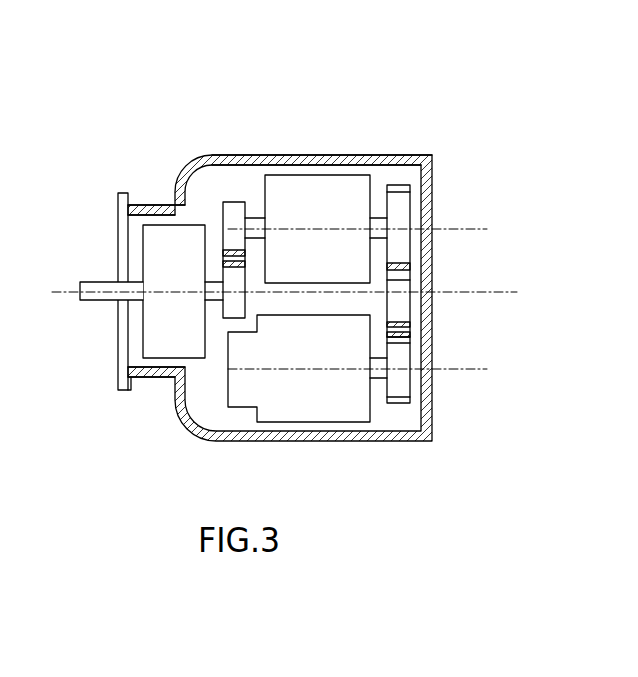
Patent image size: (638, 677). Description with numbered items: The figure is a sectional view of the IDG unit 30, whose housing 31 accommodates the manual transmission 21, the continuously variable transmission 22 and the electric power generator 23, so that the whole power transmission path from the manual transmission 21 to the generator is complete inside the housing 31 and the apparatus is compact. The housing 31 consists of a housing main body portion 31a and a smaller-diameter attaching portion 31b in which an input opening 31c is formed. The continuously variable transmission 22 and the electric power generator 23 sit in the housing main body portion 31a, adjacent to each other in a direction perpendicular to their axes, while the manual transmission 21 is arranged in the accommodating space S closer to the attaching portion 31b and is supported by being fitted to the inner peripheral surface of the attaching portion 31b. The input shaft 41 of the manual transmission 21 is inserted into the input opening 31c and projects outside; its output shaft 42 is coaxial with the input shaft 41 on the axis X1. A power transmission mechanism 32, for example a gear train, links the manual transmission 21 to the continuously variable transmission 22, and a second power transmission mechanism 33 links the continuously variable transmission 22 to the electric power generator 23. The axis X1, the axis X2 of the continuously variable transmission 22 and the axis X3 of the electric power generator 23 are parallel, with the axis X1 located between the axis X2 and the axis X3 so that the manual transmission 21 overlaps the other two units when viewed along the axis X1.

The IDG unit 30 is at (161, 97).
The housing 31 is at (285, 256).
The housing main body portion 31a is at (377, 155).
The attaching portion 31b is at (123, 193).
The input opening 31c is at (116, 333).
The manual transmission 21 is at (166, 345).
The input shaft 41 is at (100, 282).
The output shaft 42 is at (215, 302).
The power transmission mechanism 32 is at (226, 201).
The continuously variable transmission 22 is at (302, 183).
The power transmission mechanism 33 is at (409, 315).
The electric power generator 23 is at (301, 410).
The accommodating space S is at (395, 422).
The axis of the manual transmission X1 is at (493, 293).
The axis of the continuously variable transmission X2 is at (467, 222).
The axis of the electric power generator X3 is at (460, 372).